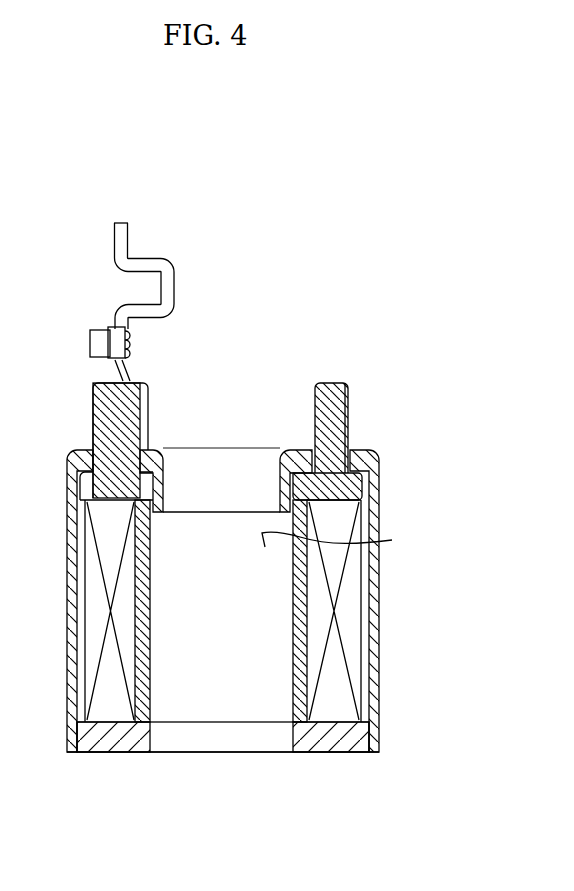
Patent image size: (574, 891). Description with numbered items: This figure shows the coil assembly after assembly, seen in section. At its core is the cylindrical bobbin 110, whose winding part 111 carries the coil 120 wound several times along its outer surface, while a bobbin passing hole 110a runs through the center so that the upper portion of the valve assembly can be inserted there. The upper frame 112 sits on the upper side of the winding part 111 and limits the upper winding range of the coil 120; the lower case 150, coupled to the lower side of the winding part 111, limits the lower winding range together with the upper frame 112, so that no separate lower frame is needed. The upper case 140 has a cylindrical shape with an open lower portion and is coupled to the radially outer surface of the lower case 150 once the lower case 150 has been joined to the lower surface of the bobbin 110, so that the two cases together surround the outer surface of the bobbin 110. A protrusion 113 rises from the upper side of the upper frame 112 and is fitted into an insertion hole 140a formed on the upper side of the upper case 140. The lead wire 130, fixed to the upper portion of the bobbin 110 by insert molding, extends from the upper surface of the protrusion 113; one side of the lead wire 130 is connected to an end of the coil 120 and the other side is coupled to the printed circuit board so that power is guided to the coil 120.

The bobbin 110 is at (358, 408).
The bobbin passing hole 110a is at (345, 540).
The winding part 111 is at (310, 570).
The upper frame 112 is at (365, 485).
The protrusion 113 is at (107, 424).
The coil 120 is at (347, 603).
The lead wire 130 is at (176, 288).
The upper case 140 is at (377, 517).
The insertion hole 140a is at (372, 449).
The lower case 150 is at (347, 735).